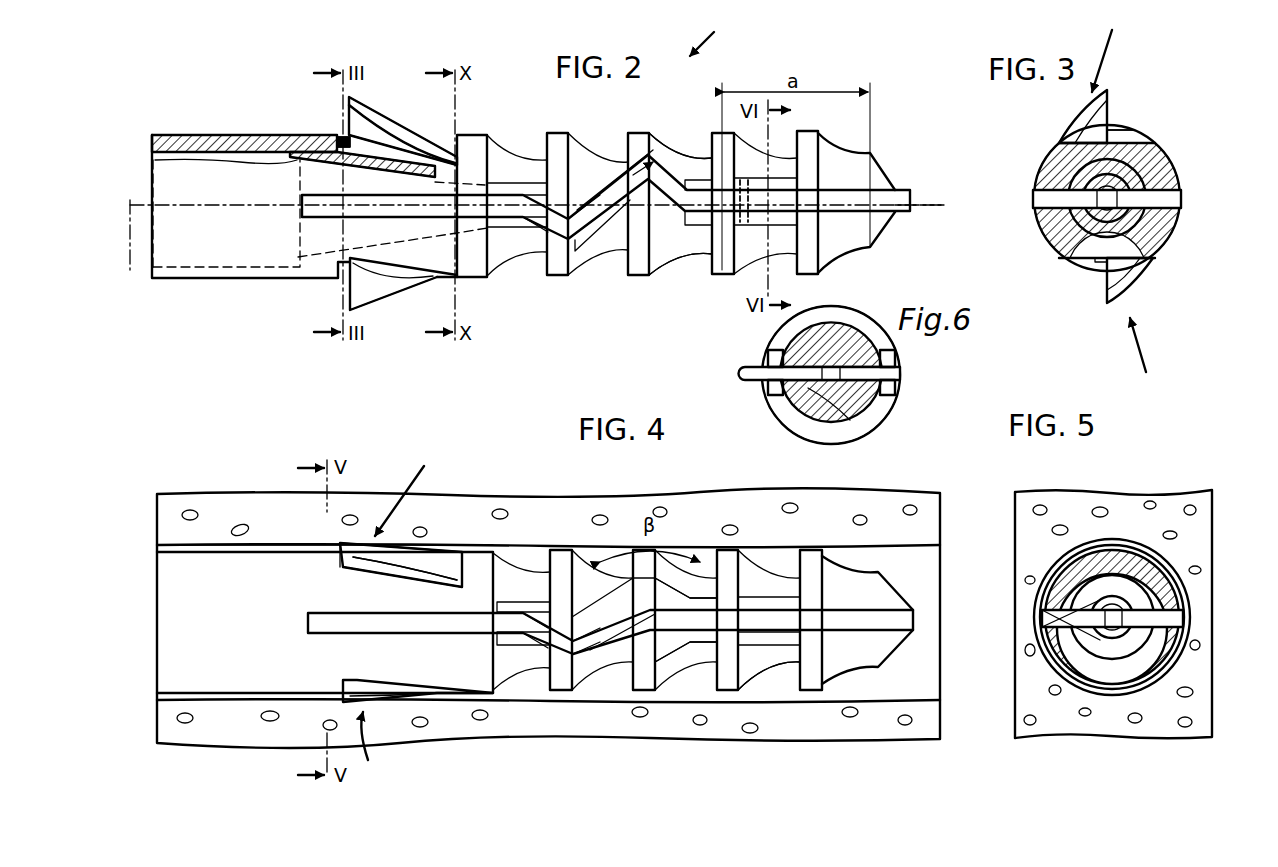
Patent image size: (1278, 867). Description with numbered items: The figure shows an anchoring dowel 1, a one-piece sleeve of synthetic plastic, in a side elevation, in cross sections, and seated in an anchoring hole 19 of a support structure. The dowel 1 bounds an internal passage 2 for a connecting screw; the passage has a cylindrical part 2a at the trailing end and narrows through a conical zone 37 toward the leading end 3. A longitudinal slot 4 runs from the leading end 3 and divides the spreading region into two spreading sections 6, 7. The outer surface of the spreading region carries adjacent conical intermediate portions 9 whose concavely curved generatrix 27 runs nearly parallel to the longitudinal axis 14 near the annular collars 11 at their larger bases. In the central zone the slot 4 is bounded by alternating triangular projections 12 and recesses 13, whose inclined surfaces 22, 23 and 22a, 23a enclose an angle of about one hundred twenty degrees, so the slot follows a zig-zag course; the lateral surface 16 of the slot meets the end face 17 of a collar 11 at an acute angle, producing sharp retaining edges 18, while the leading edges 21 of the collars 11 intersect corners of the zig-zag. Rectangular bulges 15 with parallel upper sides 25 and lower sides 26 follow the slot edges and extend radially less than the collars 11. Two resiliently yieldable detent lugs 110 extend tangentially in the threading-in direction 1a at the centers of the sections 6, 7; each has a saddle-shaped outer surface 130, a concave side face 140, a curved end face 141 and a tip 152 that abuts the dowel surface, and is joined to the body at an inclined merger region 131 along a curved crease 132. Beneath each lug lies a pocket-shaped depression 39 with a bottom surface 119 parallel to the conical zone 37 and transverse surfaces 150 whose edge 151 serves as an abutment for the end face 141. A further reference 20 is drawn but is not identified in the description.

In FIG. 2, the anchoring dowel 1 is at (710, 34).
In FIG. 3, the anchoring dowel 1 is at (1076, 318).
In FIG. 5, the anchoring dowel 1 is at (1194, 600).
In FIG. 2, the threading-in direction 1a is at (196, 234).
In FIG. 2, the internal passage 2 is at (166, 146).
In FIG. 4, the internal passage 2 is at (325, 622).
In FIG. 5, the internal passage 2 is at (1115, 605).
In FIG. 2, the cylindrical part 2a is at (222, 135).
In FIG. 2, the leading end 3 is at (890, 152).
In FIG. 4, the leading end 3 is at (867, 620).
In FIG. 2, the longitudinal slot 4 is at (606, 200).
In FIG. 3, the longitudinal slot 4 is at (1170, 199).
In FIG. 6, the longitudinal slot 4 is at (820, 373).
In FIG. 4, the longitudinal slot 4 is at (312, 626).
In FIG. 5, the longitudinal slot 4 is at (1176, 620).
In FIG. 2, the spreading section 6 is at (707, 124).
In FIG. 3, the spreading section 6 is at (1050, 182).
In FIG. 6, the spreading section 6 is at (858, 322).
In FIG. 4, the spreading section 6 is at (740, 568).
In FIG. 2, the spreading section 7 is at (696, 270).
In FIG. 3, the spreading section 7 is at (1062, 236).
In FIG. 6, the spreading section 7 is at (876, 414).
In FIG. 4, the spreading section 7 is at (752, 676).
In FIG. 2, the conical intermediate portions 9 is at (553, 258).
In FIG. 4, the conical intermediate portions 9 is at (700, 580).
In FIG. 2, the annular collars 11 is at (807, 160).
In FIG. 6, the annular collars 11 is at (840, 310).
In FIG. 4, the annular collars 11 is at (558, 560).
In FIG. 2, the projection 12 is at (571, 216).
In FIG. 4, the projection 12 is at (572, 638).
In FIG. 2, the recess 13 is at (574, 242).
In FIG. 4, the recess 13 is at (574, 660).
In FIG. 2, the longitudinal axis 14 is at (900, 200).
In FIG. 2, the bulges 15 is at (543, 160).
In FIG. 6, the bulges 15 is at (760, 381).
In FIG. 4, the bulges 15 is at (522, 606).
In FIG. 6, the lateral surface 16 is at (805, 378).
In FIG. 2, the end face 17 is at (700, 320).
In FIG. 4, the edges 18 is at (625, 660).
In FIG. 4, the anchoring hole 19 is at (230, 549).
In FIG. 5, the anchoring hole 19 is at (1100, 553).
In FIG. 3, the insertion direction 20 is at (1126, 201).
In FIG. 4, the insertion direction 20 is at (403, 611).
In FIG. 2, the edges 21 is at (548, 140).
In FIG. 4, the inclined surface 22 is at (548, 618).
In FIG. 4, the inclined surface 22a is at (552, 650).
In FIG. 4, the inclined surface 23 is at (598, 620).
In FIG. 4, the inclined surface 23a is at (590, 660).
In FIG. 2, the upper sides 25 is at (760, 181).
In FIG. 6, the upper sides 25 is at (774, 356).
In FIG. 2, the lower sides 26 is at (546, 238).
In FIG. 6, the lower sides 26 is at (776, 400).
In FIG. 2, the generatrix 27 is at (684, 145).
In FIG. 4, the generatrix 27 is at (830, 575).
In FIG. 2, the conical zone 37 is at (366, 174).
In FIG. 2, the pocket-shaped depression 39 is at (372, 154).
In FIG. 3, the pocket-shaped depression 39 is at (1108, 136).
In FIG. 2, the detent lugs 110 is at (404, 120).
In FIG. 3, the detent lugs 110 is at (1140, 116).
In FIG. 4, the detent lugs 110 is at (452, 562).
In FIG. 5, the detent lugs 110 is at (1120, 537).
In FIG. 2, the bottom surface 119 is at (398, 162).
In FIG. 3, the bottom surface 119 is at (1140, 140).
In FIG. 4, the bottom surface 119 is at (386, 568).
In FIG. 2, the outer surface 130 is at (385, 110).
In FIG. 3, the outer surface 130 is at (1080, 116).
In FIG. 4, the outer surface 130 is at (401, 565).
In FIG. 3, the merger region 131 is at (1062, 131).
In FIG. 2, the crease 132 is at (380, 290).
In FIG. 4, the crease 132 is at (378, 680).
In FIG. 2, the side face 140 is at (470, 137).
In FIG. 3, the side face 140 is at (1112, 100).
In FIG. 4, the side face 140 is at (424, 560).
In FIG. 2, the end face 141 is at (340, 284).
In FIG. 3, the end face 141 is at (1052, 156).
In FIG. 5, the end face 141 is at (1112, 695).
In FIG. 2, the transverse surfaces 150 is at (345, 136).
In FIG. 4, the transverse surfaces 150 is at (352, 540).
In FIG. 4, the edge 151 is at (342, 564).
In FIG. 2, the tip 152 is at (338, 140).
In FIG. 3, the tip 152 is at (1108, 96).
In FIG. 4, the tip 152 is at (347, 549).
In FIG. 5, the tip 152 is at (1124, 541).